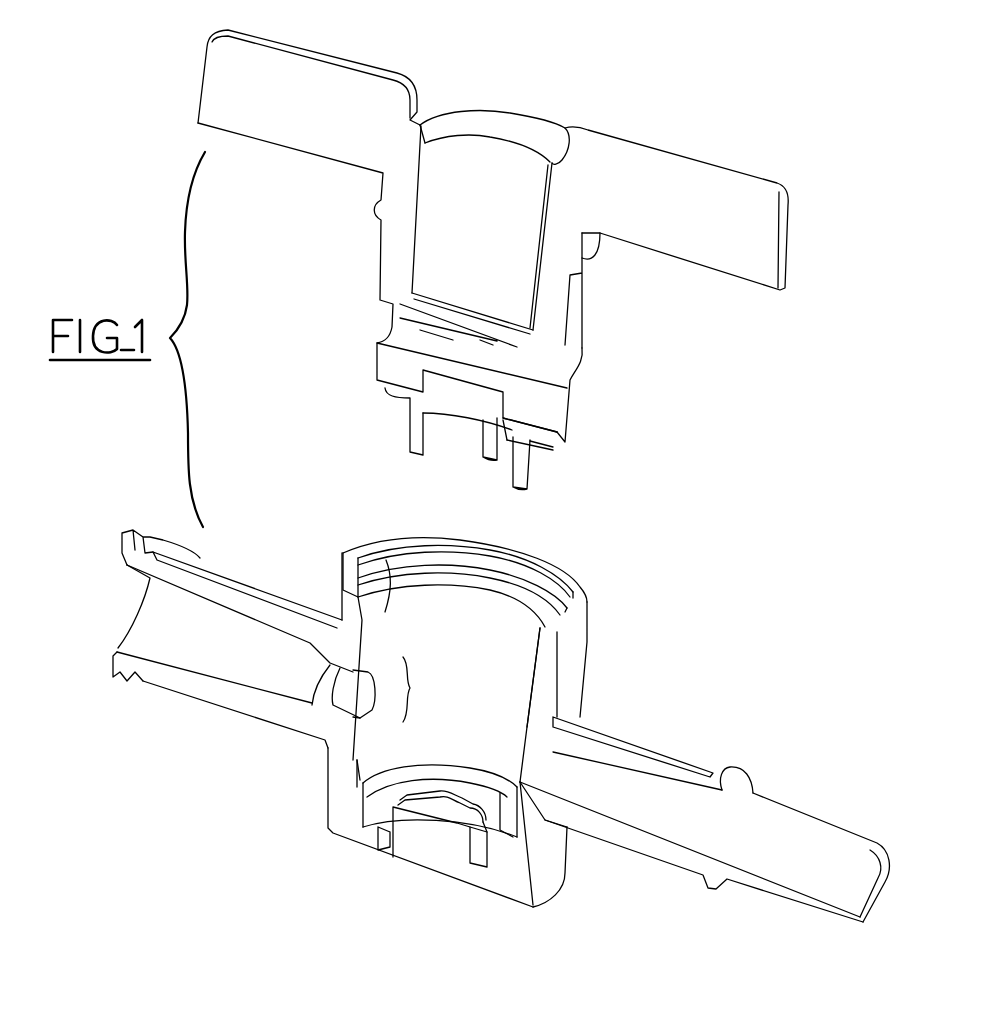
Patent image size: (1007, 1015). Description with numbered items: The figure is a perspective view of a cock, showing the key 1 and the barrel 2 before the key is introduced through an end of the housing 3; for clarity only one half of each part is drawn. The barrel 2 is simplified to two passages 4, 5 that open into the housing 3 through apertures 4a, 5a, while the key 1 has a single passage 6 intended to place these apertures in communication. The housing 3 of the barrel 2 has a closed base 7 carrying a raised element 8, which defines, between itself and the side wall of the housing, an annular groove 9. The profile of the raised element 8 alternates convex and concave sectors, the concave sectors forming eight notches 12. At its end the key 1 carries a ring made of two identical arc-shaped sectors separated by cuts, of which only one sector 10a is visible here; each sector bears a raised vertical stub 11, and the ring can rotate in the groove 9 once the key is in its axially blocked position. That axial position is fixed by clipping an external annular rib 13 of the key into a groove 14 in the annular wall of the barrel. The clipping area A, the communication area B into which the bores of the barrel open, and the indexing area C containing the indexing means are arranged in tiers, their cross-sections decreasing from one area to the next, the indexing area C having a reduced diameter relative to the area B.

The key 1 is at (380, 247).
The barrel 2 is at (517, 637).
The housing 3 is at (573, 660).
The passage 4 is at (222, 627).
The aperture 4a is at (340, 700).
The passage 5 is at (663, 803).
The aperture 5a is at (547, 760).
The passage of the key 6 is at (548, 371).
The closed base 7 is at (433, 870).
The raised element 8 is at (447, 833).
The annular groove 9 is at (380, 850).
The arc-shaped sector 10a is at (450, 435).
The raised vertical stub 11 is at (487, 450).
The notches 12 is at (483, 817).
The external annular rib 13 is at (603, 258).
The groove 14 is at (363, 587).
The clipping area A is at (383, 615).
The communication area B is at (420, 689).
The indexing area C is at (400, 837).